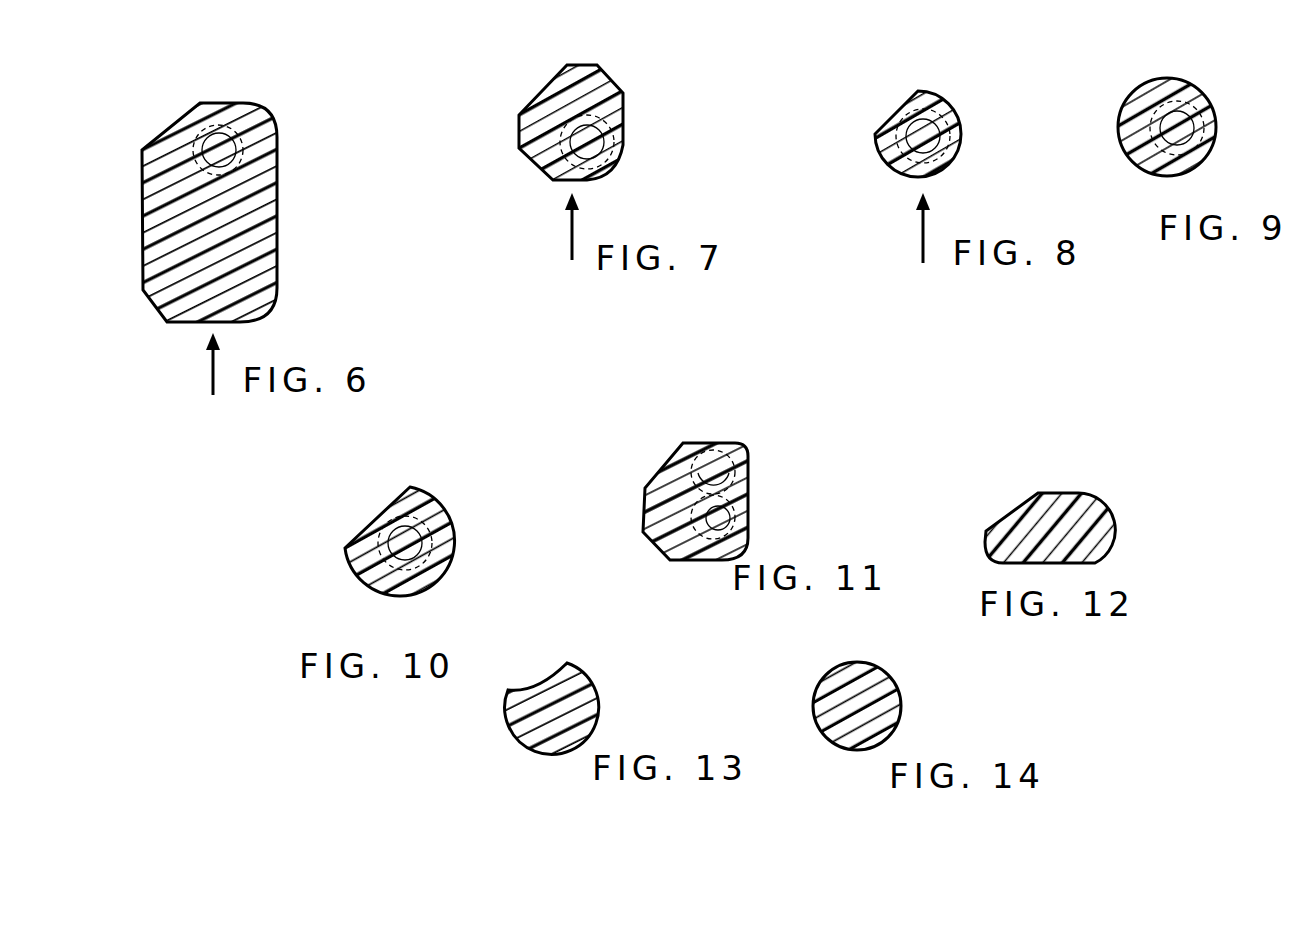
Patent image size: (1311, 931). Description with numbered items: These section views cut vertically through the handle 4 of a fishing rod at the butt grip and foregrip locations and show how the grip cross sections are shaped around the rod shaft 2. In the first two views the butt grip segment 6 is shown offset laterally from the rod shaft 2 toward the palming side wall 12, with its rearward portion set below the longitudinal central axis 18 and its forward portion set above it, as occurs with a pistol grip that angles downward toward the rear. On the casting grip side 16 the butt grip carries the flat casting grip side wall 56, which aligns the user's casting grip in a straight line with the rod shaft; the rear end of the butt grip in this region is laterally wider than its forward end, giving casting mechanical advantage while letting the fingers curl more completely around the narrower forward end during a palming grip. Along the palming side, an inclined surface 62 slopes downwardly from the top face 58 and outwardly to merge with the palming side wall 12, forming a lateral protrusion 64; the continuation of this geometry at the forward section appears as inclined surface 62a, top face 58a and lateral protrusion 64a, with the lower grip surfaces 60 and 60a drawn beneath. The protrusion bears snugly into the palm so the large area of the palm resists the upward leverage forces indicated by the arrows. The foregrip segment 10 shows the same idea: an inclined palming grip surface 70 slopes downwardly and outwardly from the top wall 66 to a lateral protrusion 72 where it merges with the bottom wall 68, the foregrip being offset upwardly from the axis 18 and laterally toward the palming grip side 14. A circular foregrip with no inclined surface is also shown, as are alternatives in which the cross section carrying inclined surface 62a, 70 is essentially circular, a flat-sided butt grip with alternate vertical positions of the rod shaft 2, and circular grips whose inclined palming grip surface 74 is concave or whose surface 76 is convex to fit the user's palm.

In FIG. 6, the rod shaft 2 is at (248, 113).
In FIG. 7, the rod shaft 2 is at (600, 118).
In FIG. 8, the rod shaft 2 is at (943, 163).
In FIG. 9, the rod shaft 2 is at (1178, 102).
In FIG. 10, the rod shaft 2 is at (412, 578).
In FIG. 11, the rod shaft 2 is at (733, 453).
In FIG. 6, the handle 4 is at (312, 190).
In FIG. 7, the handle 4 is at (655, 82).
In FIG. 8, the handle 4 is at (970, 95).
In FIG. 10, the handle 4 is at (352, 603).
In FIG. 11, the handle 4 is at (622, 564).
In FIG. 12, the handle 4 is at (1138, 549).
In FIG. 13, the handle 4 is at (630, 690).
In FIG. 14, the handle 4 is at (930, 694).
In FIG. 6, the butt grip segment 6 is at (135, 248).
In FIG. 7, the butt grip segment 6 is at (522, 176).
In FIG. 8, the foregrip segment 10 is at (975, 148).
In FIG. 9, the foregrip segment 10 is at (1235, 118).
In FIG. 6, the palming side wall 12 is at (138, 190).
In FIG. 7, the palming side wall 12 is at (517, 142).
In FIG. 9, the palming grip side 14 is at (1123, 108).
In FIG. 6, the casting grip side 16 is at (275, 296).
In FIG. 6, the longitudinal central axis 18 is at (257, 150).
In FIG. 7, the longitudinal central axis 18 is at (607, 148).
In FIG. 8, the longitudinal central axis 18 is at (957, 123).
In FIG. 9, the longitudinal central axis 18 is at (1188, 160).
In FIG. 10, the longitudinal central axis 18 is at (433, 547).
In FIG. 6, the flat casting grip side wall 56 is at (277, 227).
In FIG. 11, the flat casting grip side wall 56 is at (750, 480).
In FIG. 6, the top face 58 is at (213, 102).
In FIG. 7, the top face 58a is at (583, 65).
In FIG. 6, the bottom edge 60 is at (193, 324).
In FIG. 7, the bottom edge 60a is at (580, 182).
In FIG. 6, the inclined surface 62 is at (166, 125).
In FIG. 7, the inclined surface 62a is at (540, 93).
In FIG. 10, the inclined surface 62a is at (380, 513).
In FIG. 11, the inclined surface 62a is at (667, 463).
In FIG. 12, the inclined surface 62a is at (1020, 503).
In FIG. 6, the lateral protrusion 64 is at (147, 148).
In FIG. 7, the lateral protrusion 64a is at (517, 115).
In FIG. 10, the lateral protrusion 64a is at (342, 550).
In FIG. 11, the lateral protrusion 64a is at (647, 490).
In FIG. 12, the lateral protrusion 64a is at (986, 532).
In FIG. 8, the top wall 66 is at (918, 90).
In FIG. 8, the bottom wall 68 is at (910, 177).
In FIG. 8, the inclined palming grip surface 70 is at (897, 112).
In FIG. 8, the lateral protrusion 72 is at (875, 138).
In FIG. 13, the concave inclined palming grip surface 74 is at (537, 684).
In FIG. 14, the convex inclined palming grip surface 76 is at (838, 675).